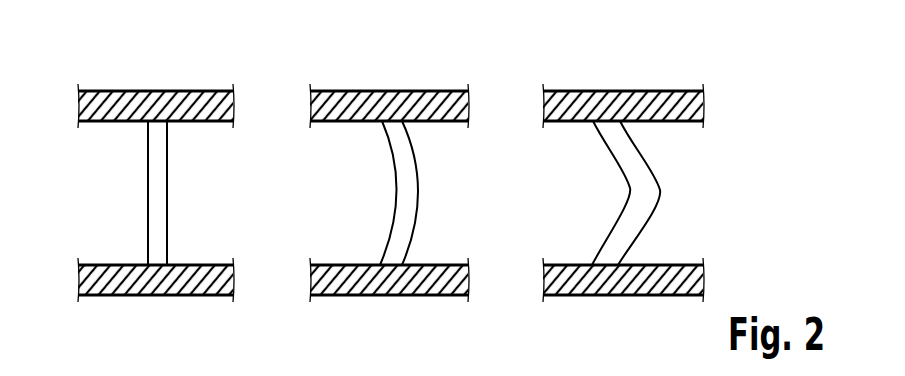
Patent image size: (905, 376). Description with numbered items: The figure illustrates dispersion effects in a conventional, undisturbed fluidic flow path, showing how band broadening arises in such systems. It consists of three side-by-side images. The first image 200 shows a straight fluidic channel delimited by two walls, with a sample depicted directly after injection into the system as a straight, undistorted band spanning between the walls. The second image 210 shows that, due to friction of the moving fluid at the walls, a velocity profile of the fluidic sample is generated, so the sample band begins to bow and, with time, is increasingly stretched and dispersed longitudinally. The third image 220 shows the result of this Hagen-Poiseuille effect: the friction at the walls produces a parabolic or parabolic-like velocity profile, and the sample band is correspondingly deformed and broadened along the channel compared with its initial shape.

The first image 200 is at (151, 68).
The image 210 is at (391, 68).
The image 220 is at (612, 68).